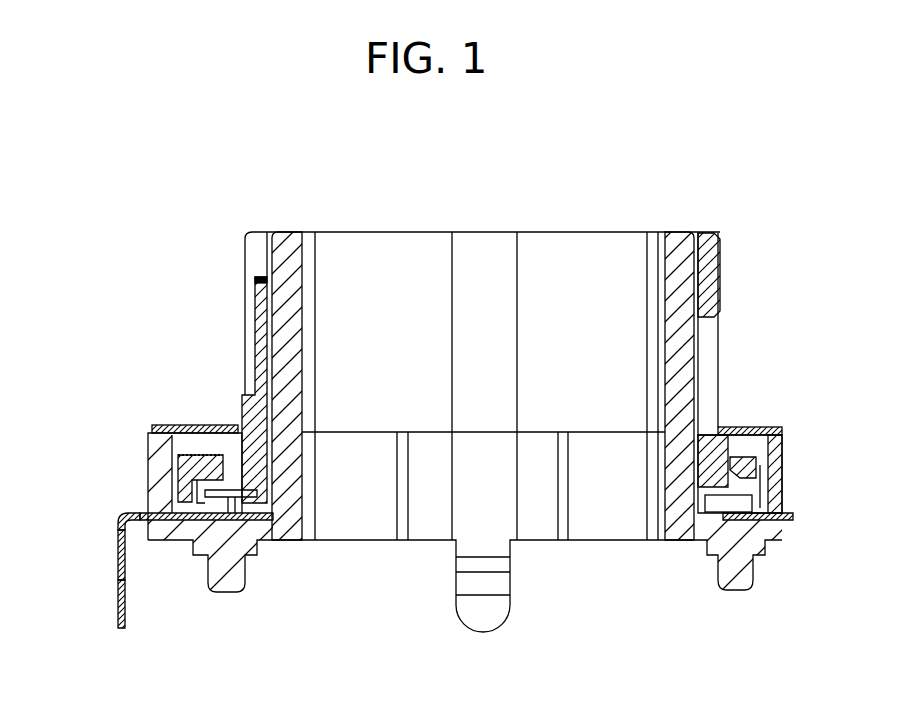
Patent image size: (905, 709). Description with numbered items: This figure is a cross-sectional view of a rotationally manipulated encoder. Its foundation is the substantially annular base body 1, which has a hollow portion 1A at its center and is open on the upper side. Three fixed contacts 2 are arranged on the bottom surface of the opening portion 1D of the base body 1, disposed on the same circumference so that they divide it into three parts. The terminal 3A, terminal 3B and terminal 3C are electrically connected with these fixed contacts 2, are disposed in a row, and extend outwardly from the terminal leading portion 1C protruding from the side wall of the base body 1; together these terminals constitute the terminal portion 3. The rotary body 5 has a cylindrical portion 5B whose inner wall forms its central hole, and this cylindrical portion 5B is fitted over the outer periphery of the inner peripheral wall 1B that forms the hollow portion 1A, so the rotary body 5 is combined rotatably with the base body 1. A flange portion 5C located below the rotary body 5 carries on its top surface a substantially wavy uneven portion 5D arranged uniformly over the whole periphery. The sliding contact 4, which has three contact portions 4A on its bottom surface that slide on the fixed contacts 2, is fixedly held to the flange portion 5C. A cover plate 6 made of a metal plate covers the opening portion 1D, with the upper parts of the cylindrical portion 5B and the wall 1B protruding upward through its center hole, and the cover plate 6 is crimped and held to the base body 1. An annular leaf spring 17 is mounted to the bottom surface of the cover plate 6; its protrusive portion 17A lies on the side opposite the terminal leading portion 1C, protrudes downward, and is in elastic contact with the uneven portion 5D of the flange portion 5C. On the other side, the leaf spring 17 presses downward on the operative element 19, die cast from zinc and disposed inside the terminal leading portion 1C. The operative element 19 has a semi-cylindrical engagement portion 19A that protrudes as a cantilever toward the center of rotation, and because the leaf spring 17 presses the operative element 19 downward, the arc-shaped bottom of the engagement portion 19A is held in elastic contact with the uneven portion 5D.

The base body 1 is at (680, 528).
The hollow portion 1A is at (538, 262).
The inner peripheral wall 1B is at (678, 250).
The terminal leading portion 1C is at (163, 453).
The opening portion 1D is at (158, 427).
The fixed contact 2 is at (258, 514).
The terminal portion 3 is at (123, 612).
The terminal 3A is at (129, 521).
The terminal 3B is at (121, 555).
The terminal 3C is at (121, 604).
The sliding contact 4 is at (150, 491).
The contact portion 4A is at (213, 503).
The rotary body 5 is at (257, 410).
The cylindrical portion 5B is at (262, 277).
The flange portion 5C is at (768, 492).
The uneven portion 5D is at (747, 467).
The cover plate 6 is at (740, 427).
The annular leaf spring 17 is at (812, 403).
The protrusive portion 17A is at (888, 373).
The operative element 19 is at (170, 412).
The engagement portion 19A is at (197, 460).